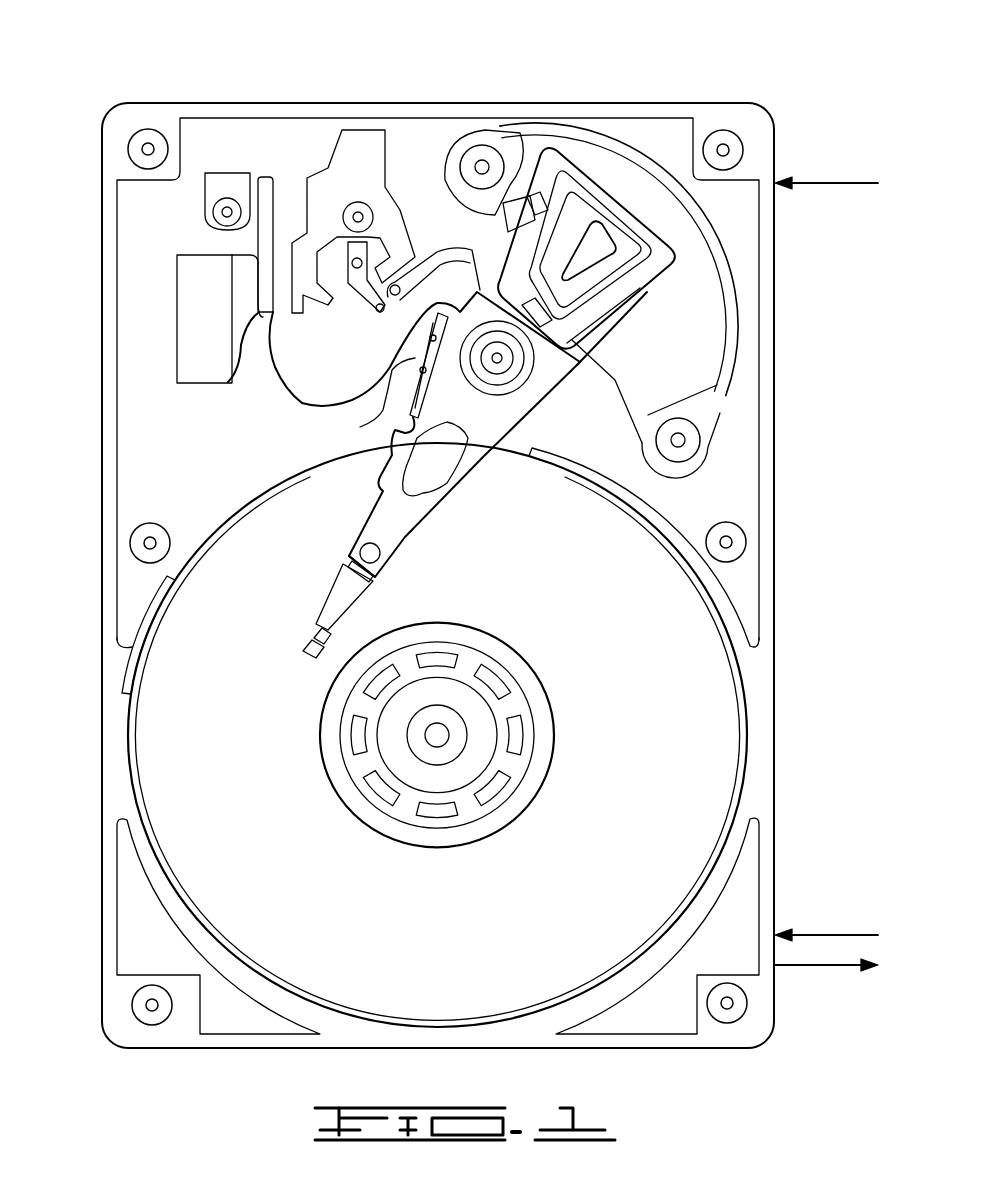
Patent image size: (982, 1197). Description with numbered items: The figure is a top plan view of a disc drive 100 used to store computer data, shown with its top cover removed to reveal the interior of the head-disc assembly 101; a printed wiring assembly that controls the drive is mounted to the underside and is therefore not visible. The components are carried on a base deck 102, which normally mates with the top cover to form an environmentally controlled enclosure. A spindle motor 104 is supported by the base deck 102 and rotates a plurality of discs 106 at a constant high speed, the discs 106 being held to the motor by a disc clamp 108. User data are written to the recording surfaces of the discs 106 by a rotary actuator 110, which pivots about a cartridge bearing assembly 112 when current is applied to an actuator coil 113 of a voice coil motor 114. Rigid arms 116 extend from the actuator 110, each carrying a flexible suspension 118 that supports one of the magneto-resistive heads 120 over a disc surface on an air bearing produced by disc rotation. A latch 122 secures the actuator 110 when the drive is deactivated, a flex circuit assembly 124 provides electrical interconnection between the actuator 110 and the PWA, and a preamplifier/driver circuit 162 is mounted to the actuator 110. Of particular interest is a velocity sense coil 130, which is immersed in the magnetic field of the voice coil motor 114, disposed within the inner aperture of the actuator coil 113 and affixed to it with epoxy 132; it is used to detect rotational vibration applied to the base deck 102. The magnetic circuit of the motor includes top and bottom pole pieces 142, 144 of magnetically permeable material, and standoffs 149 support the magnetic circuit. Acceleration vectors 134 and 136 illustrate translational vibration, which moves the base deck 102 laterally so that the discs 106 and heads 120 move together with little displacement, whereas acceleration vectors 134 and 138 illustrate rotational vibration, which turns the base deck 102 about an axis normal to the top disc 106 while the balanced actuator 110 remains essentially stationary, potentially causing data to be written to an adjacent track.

The disc drive 100 is at (207, 80).
The head-disc assembly 101 is at (121, 163).
The base deck 102 is at (190, 445).
The spindle motor 104 is at (445, 757).
The discs 106 is at (670, 815).
The disc clamp 108 is at (345, 775).
The rotary actuator 110 is at (474, 426).
The cartridge bearing assembly 112 is at (507, 373).
The actuator coil 113 is at (577, 182).
The voice coil motor 114 is at (512, 153).
The rigid arms 116 is at (378, 530).
The flexible suspension 118 is at (333, 612).
The heads 120 is at (305, 640).
The latch 122 is at (360, 150).
The flex circuit assembly 124 is at (302, 407).
The velocity sense coil 130 is at (635, 245).
The epoxy 132 is at (607, 282).
The acceleration vector 134 is at (815, 183).
The acceleration vector 136 is at (818, 935).
The acceleration vector 138 is at (818, 965).
The top pole piece 142 is at (697, 365).
The bottom pole piece 144 is at (710, 415).
The standoffs 149 is at (482, 188).
The preamplifier/driver circuit 162 is at (380, 413).